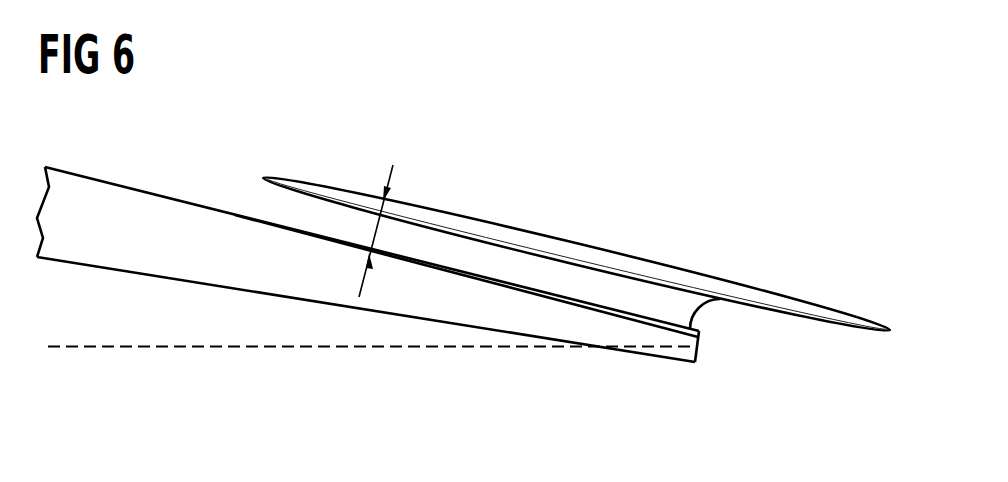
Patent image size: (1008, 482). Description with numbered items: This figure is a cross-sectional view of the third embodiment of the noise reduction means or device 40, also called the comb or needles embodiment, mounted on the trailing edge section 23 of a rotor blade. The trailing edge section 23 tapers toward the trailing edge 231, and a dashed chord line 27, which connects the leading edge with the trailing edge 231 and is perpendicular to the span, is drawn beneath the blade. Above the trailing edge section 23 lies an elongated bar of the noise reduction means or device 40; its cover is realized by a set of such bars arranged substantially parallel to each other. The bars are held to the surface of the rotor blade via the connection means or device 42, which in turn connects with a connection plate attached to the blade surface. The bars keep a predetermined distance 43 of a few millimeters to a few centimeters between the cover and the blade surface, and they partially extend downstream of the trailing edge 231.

The trailing edge section 23 is at (262, 265).
The trailing edge 231 is at (697, 342).
The noise reduction means or device 40 is at (563, 205).
The connection means or device 42 is at (622, 292).
The predetermined distance 43 is at (370, 228).
The chord line 27 is at (378, 348).